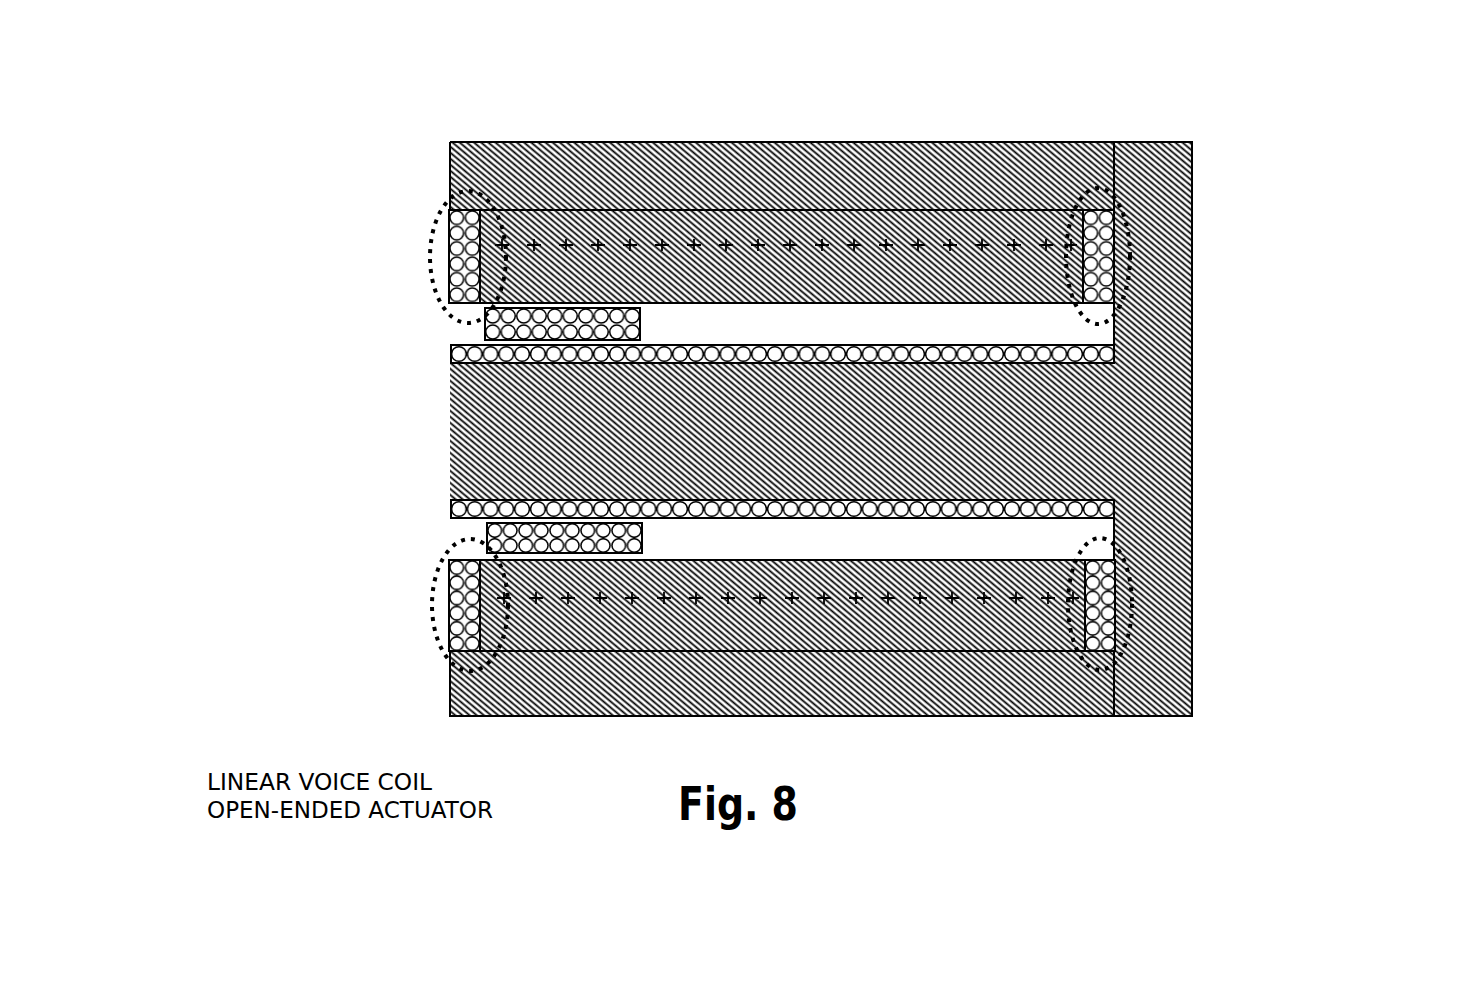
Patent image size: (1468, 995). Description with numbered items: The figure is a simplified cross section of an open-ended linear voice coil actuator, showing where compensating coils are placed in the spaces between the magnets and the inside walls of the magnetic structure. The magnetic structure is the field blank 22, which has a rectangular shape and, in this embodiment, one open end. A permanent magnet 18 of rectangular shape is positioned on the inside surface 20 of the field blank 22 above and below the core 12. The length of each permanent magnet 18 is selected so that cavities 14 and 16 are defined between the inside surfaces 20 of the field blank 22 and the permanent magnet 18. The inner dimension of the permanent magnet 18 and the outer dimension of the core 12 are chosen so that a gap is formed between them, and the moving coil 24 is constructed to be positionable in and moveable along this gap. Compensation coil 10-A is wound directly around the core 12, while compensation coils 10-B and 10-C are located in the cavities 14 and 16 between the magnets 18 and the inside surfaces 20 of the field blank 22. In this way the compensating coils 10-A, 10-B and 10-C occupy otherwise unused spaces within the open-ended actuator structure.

The compensation coil 10-A is at (906, 502).
The compensation coil 10-B is at (1112, 245).
The compensation coil 10-C is at (447, 236).
The core 12 is at (1060, 468).
The cavity 14 is at (1104, 180).
The cavity 16 is at (462, 174).
The permanent magnet 18 is at (703, 224).
The inside surface 20 is at (1125, 272).
The field blank 22 is at (1010, 155).
The moving coil 24 is at (485, 328).